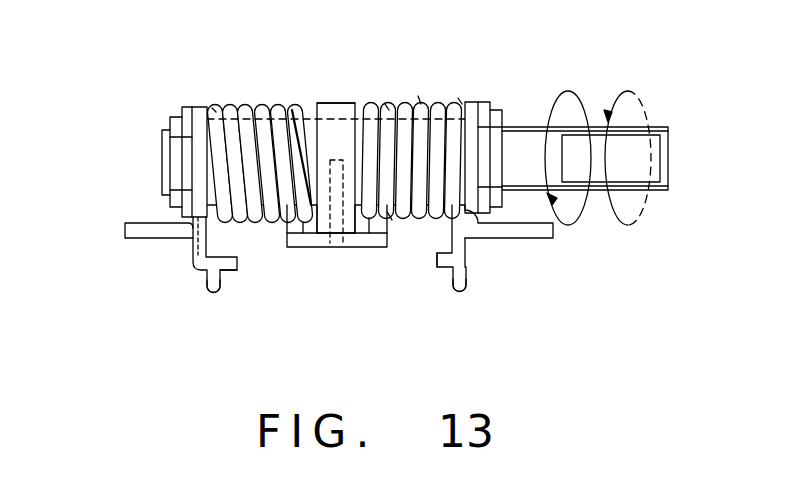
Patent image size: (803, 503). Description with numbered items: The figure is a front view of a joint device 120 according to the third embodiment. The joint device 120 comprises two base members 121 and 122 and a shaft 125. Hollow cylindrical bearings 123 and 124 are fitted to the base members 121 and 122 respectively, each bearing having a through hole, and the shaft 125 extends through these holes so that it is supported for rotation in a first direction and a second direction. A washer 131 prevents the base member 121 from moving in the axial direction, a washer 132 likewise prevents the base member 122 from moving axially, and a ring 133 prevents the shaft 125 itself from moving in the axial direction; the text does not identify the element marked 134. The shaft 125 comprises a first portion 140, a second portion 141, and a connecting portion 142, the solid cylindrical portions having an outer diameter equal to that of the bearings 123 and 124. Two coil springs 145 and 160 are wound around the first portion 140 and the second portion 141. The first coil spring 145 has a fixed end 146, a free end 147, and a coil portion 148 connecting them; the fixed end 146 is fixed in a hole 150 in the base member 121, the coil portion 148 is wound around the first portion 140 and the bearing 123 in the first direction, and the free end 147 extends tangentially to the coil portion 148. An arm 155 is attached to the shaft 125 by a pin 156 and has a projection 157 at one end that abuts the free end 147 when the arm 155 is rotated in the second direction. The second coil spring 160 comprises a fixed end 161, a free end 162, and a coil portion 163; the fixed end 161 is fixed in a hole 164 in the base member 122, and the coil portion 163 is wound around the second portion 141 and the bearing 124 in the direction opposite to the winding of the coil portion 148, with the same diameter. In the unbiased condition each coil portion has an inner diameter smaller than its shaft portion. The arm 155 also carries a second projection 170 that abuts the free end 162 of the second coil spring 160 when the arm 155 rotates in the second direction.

The joint device 120 is at (116, 266).
The base member 121 is at (188, 233).
The base member 122 is at (492, 235).
The bearing 123 is at (249, 102).
The bearing 124 is at (440, 100).
The shaft 125 is at (310, 100).
The washer 131 is at (182, 106).
The washer 132 is at (493, 100).
The ring 133 is at (170, 120).
The right end cap 134 is at (518, 108).
The first portion 140 is at (296, 98).
The second portion 141 is at (388, 100).
The connecting portion 142 is at (672, 138).
The first coil spring 145 is at (216, 88).
The fixed end 146 is at (211, 292).
The free end 147 is at (308, 245).
The coil portion 148 is at (278, 100).
The hole 150 is at (230, 270).
The arm 155 is at (351, 92).
The pin 156 is at (340, 245).
The projection 157 is at (288, 230).
The second coil spring 160 is at (468, 84).
The fixed end 161 is at (470, 281).
The free end 162 is at (377, 245).
The coil portion 163 is at (422, 100).
The hole 164 is at (446, 270).
The second projection 170 is at (392, 222).